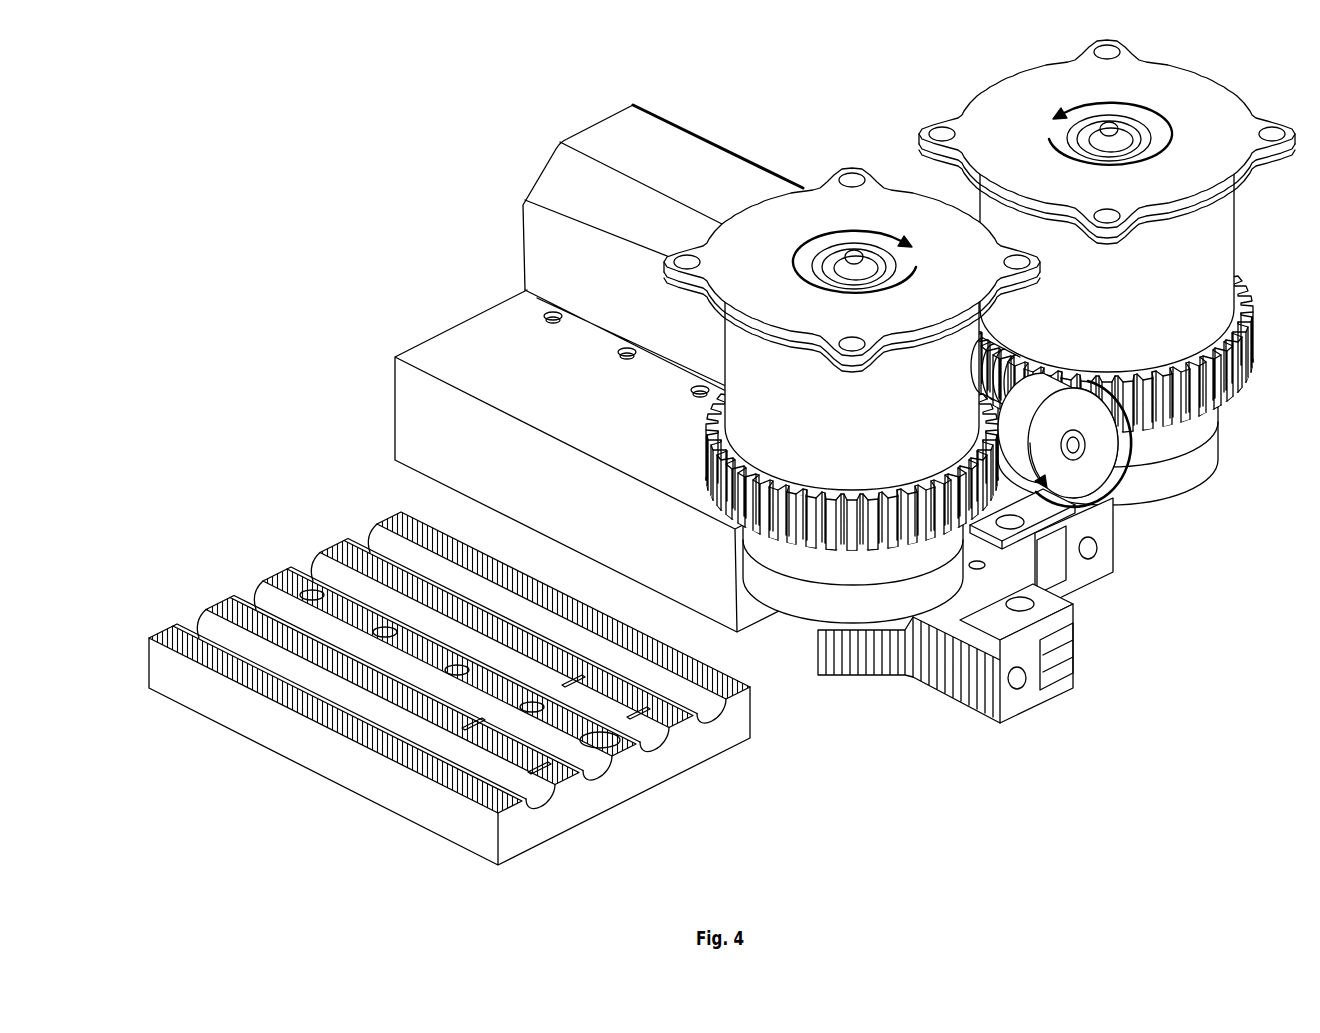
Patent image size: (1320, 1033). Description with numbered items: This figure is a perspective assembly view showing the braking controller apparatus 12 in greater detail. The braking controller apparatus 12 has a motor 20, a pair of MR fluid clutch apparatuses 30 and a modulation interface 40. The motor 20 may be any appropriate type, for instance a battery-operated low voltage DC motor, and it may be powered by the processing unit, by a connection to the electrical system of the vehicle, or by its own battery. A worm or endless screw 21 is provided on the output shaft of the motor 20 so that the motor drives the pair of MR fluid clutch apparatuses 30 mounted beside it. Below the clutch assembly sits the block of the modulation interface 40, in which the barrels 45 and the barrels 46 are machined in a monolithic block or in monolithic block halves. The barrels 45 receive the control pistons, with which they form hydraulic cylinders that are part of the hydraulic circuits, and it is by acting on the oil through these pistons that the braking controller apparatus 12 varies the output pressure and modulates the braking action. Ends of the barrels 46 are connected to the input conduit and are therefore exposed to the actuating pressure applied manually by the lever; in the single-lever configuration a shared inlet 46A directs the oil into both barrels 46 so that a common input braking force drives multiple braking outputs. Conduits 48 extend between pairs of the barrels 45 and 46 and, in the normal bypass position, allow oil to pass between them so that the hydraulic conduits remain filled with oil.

The braking controller apparatus 12 is at (823, 422).
The motor 20 is at (592, 112).
The worm or endless screw 21 is at (1080, 477).
The MR fluid clutch apparatus 30 is at (1267, 90).
The modulation interface 40 is at (434, 586).
The barrels 45 is at (322, 683).
The barrels 46 is at (452, 697).
The shared inlet 46A is at (599, 745).
The conduits 48 is at (637, 712).